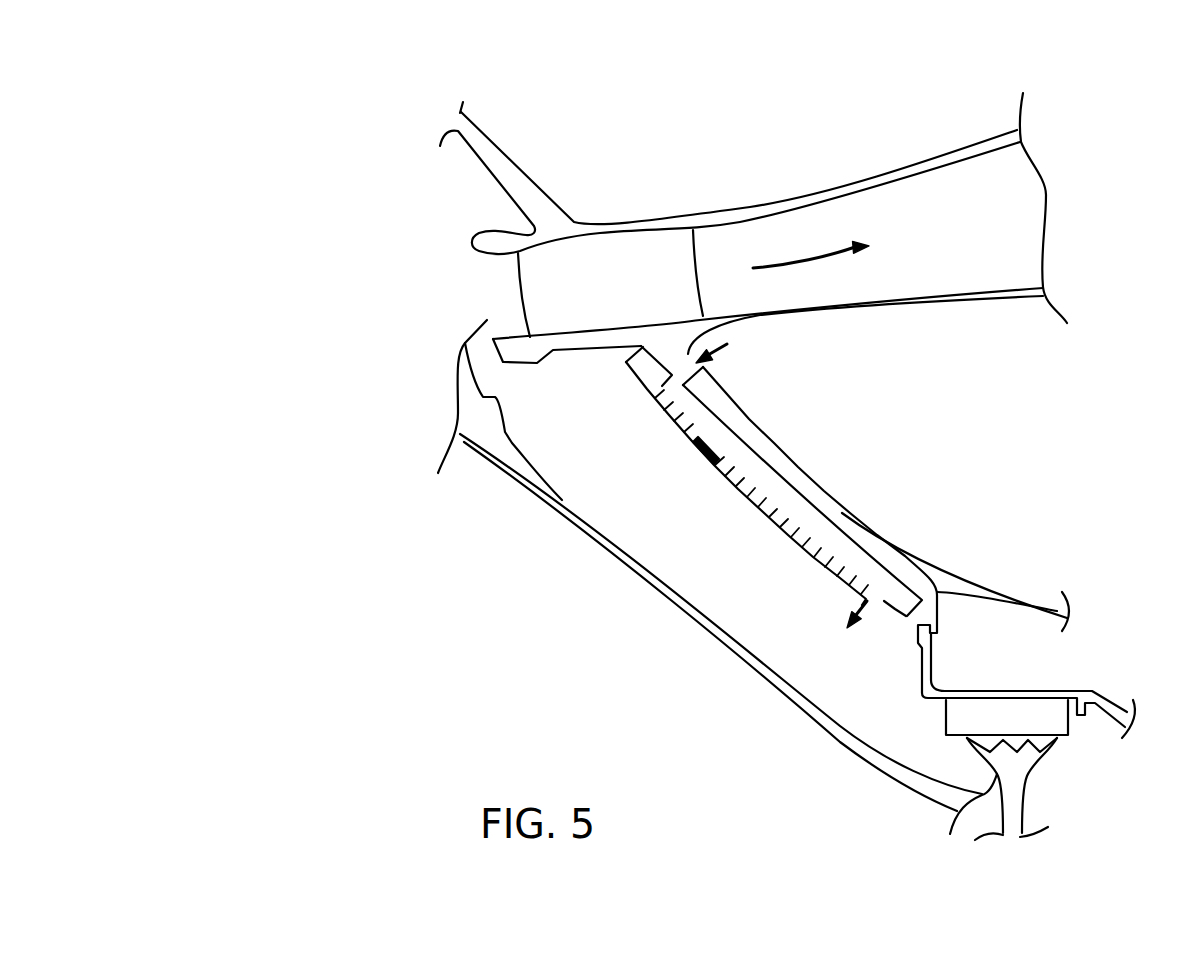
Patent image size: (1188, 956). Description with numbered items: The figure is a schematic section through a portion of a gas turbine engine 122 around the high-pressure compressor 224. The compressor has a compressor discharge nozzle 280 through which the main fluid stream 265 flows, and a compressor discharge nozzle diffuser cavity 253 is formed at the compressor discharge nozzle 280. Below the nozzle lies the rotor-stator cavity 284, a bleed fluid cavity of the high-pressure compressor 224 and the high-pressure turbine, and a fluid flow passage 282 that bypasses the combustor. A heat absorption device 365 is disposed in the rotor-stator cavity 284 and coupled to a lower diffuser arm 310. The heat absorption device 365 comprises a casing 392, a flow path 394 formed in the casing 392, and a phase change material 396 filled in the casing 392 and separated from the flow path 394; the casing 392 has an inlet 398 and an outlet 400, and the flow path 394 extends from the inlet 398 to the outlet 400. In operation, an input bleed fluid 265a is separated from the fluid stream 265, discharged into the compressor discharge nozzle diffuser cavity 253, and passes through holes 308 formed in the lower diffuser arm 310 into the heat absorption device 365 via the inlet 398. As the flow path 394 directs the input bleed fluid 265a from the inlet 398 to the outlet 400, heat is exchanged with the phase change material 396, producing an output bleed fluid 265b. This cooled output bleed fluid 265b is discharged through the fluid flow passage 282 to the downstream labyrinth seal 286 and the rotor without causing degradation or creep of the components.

The gas turbine engine 122 is at (266, 67).
The high-pressure compressor 224 is at (493, 352).
The compressor discharge nozzle diffuser cavity 253 is at (777, 484).
The fluid stream 265 is at (828, 256).
The input bleed fluid 265a is at (730, 348).
The output bleed fluid 265b is at (868, 610).
The compressor discharge nozzle 280 is at (760, 201).
The fluid flow passage 282 is at (681, 507).
The rotor-stator cavity 284 is at (603, 485).
The labyrinth seal 286 is at (943, 718).
The holes 308 is at (680, 352).
The lower diffuser arm 310 is at (906, 551).
The heat absorption device 365 is at (788, 528).
The casing 392 is at (747, 483).
The flow path 394 is at (828, 538).
The phase change material 396 is at (715, 456).
The inlet 398 is at (668, 382).
The outlet 400 is at (866, 596).